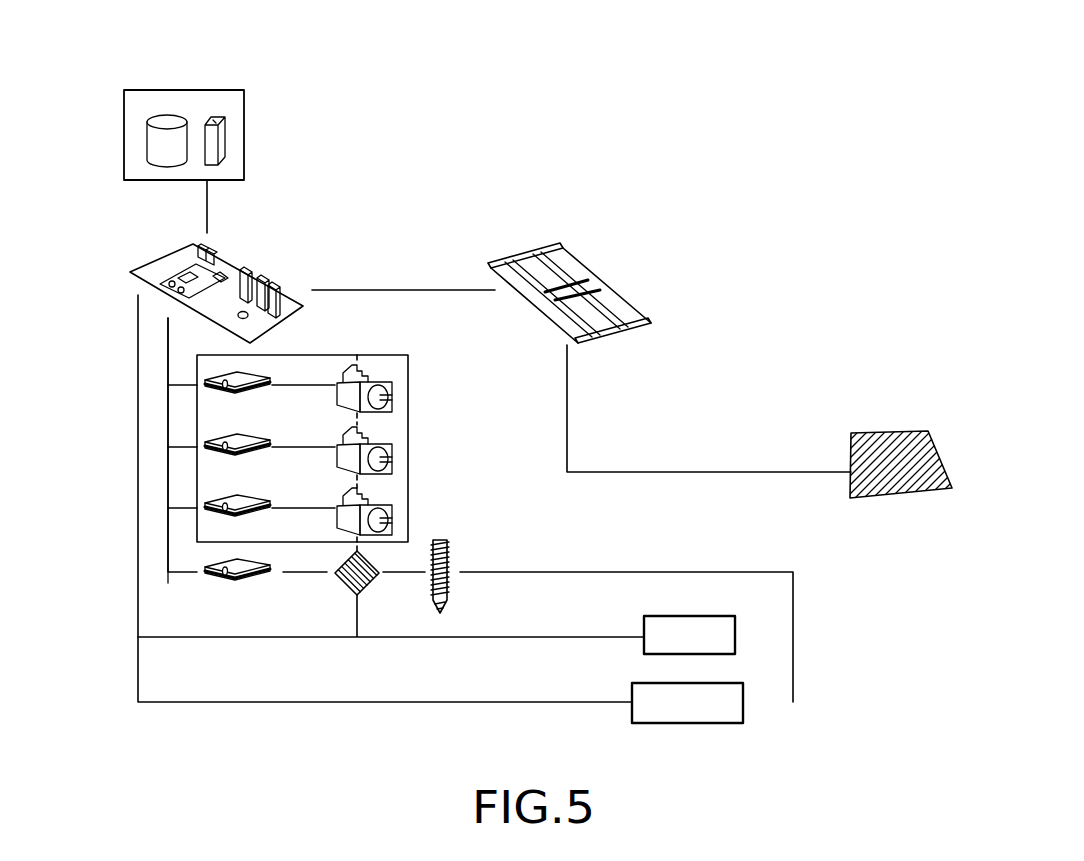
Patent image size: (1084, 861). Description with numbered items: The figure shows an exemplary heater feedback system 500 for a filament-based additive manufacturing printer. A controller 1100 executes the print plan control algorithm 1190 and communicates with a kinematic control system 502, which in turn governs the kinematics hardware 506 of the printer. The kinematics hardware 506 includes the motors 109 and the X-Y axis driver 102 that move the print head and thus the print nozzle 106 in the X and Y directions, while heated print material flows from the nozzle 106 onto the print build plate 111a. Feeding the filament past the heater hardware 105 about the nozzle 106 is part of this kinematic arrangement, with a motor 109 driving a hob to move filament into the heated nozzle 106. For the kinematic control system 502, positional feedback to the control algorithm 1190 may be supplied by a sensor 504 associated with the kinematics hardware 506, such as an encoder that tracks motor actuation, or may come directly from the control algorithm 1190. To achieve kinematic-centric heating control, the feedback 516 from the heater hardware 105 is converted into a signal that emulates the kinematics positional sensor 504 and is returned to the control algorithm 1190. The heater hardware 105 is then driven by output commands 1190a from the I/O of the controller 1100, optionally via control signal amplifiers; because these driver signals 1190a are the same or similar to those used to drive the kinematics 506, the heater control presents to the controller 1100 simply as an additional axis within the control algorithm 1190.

The heater feedback system 500 is at (747, 160).
The controller 1100 is at (245, 131).
The control algorithm 1190 is at (168, 114).
The output commands 1190a is at (168, 583).
The kinematic control system 502 is at (258, 276).
The kinematics hardware 506 is at (351, 432).
The motor 109 is at (392, 385).
The X-Y axis driver 102 is at (392, 445).
The print nozzle 106 is at (488, 567).
The heater hardware 105 is at (450, 585).
The print build plate 111a is at (888, 433).
The sensor 504 is at (689, 635).
The feedback 516 is at (687, 703).